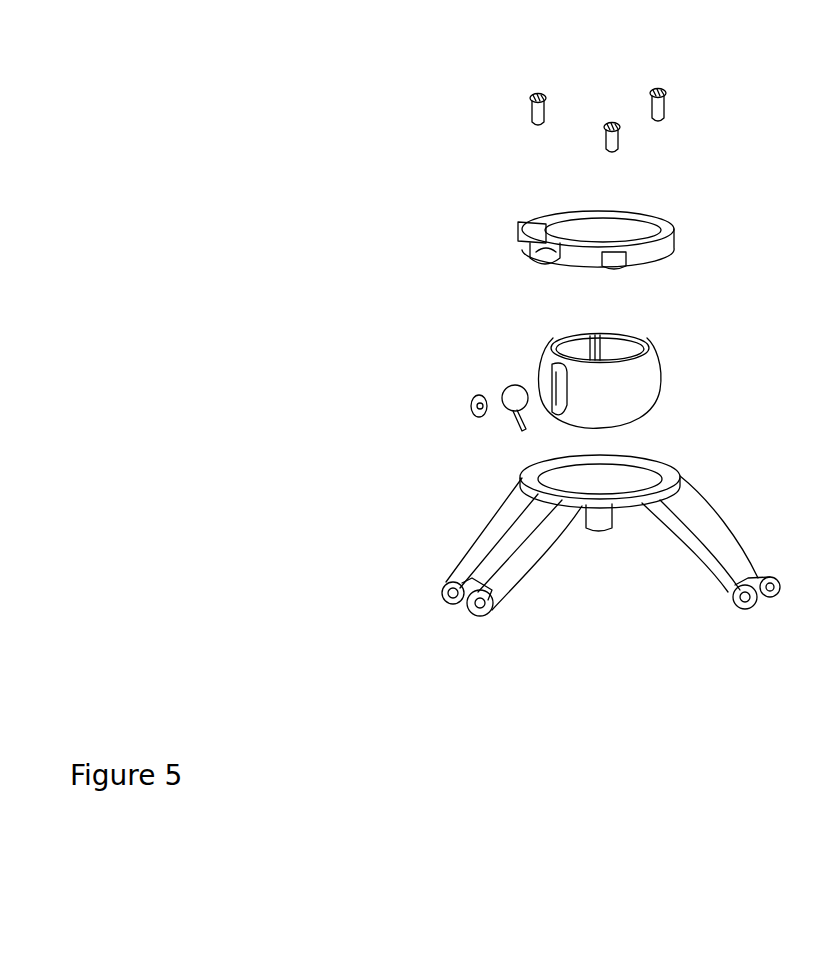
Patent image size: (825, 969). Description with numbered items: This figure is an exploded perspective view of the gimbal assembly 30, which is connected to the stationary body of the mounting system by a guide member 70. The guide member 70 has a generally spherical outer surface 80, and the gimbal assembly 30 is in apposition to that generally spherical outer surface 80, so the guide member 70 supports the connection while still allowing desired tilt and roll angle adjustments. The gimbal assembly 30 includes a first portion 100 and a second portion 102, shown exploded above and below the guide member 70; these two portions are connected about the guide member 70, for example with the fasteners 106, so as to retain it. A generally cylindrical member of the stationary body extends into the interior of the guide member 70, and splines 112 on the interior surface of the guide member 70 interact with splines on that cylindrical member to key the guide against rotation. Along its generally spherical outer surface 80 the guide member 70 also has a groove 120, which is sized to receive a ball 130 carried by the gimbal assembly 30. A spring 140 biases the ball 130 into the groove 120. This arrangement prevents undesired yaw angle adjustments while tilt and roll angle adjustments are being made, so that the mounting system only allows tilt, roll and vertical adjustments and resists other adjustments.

The gimbal assembly 30 is at (755, 343).
The fasteners 106 is at (538, 94).
The first portion 100 is at (512, 231).
The guide member 70 is at (535, 362).
The generally spherical outer surface 80 is at (661, 383).
The splines 112 is at (597, 336).
The groove 120 is at (558, 415).
The spring 140 is at (467, 402).
The ball 130 is at (523, 433).
The second portion 102 is at (712, 502).